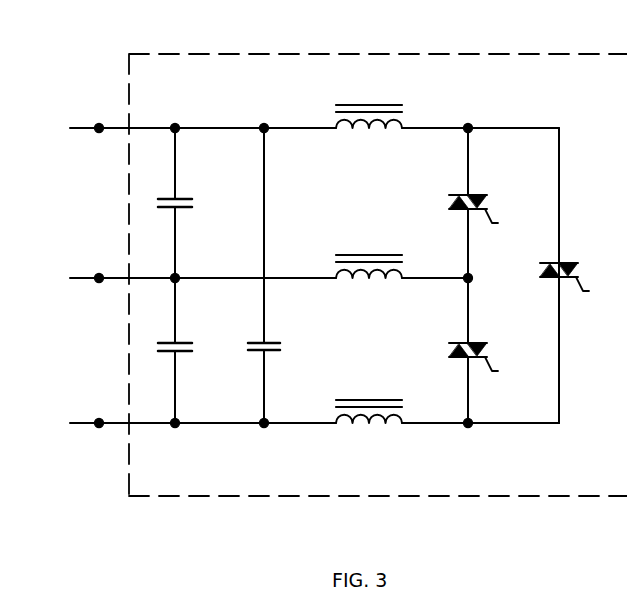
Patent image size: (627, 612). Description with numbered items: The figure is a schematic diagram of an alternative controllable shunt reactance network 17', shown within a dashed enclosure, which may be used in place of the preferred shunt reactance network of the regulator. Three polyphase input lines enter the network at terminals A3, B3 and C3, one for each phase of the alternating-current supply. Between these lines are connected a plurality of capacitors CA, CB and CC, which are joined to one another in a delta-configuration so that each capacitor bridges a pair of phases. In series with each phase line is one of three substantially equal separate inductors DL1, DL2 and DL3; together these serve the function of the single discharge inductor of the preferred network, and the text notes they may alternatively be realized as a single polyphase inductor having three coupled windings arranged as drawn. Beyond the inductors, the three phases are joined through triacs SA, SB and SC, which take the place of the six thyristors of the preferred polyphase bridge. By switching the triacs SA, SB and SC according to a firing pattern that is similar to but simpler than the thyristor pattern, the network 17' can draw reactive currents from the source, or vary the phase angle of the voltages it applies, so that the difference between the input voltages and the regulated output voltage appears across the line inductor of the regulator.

The alternative controllable shunt reactance network 17' is at (378, 294).
The phase A input terminal A3 is at (97, 124).
The phase B input terminal B3 is at (97, 274).
The phase C input terminal C3 is at (97, 419).
The capacitor CA is at (180, 197).
The capacitor CB is at (180, 341).
The capacitor CC is at (270, 341).
The inductor DL1 is at (368, 130).
The inductor DL2 is at (372, 281).
The inductor DL3 is at (366, 425).
The triac SA is at (478, 194).
The triac SB is at (483, 341).
The triac SC is at (568, 262).